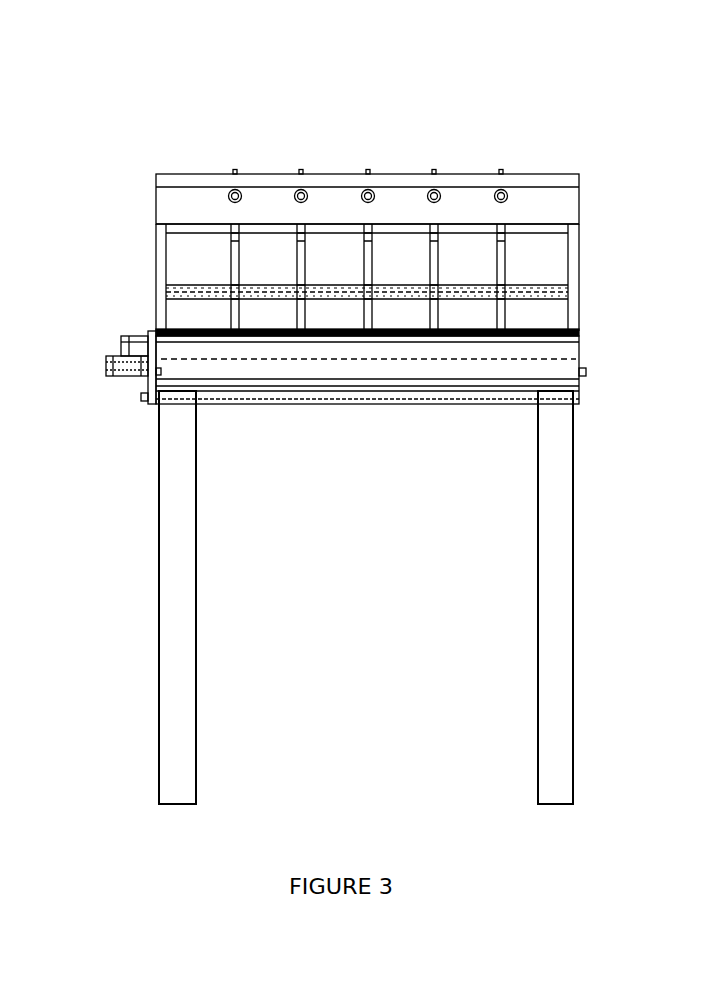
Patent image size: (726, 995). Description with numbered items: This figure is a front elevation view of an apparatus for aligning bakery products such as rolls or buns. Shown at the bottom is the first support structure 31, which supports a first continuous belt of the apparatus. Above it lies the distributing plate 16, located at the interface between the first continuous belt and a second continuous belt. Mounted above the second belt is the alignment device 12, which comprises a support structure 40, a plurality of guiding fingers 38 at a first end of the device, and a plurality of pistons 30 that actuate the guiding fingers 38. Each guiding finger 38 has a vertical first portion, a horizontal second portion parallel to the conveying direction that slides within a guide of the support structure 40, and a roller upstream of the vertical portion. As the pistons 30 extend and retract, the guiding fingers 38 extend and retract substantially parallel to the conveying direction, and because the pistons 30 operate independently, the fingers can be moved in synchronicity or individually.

The alignment device 12 is at (208, 105).
The distributing plate 16 is at (157, 322).
The pistons 30 is at (243, 173).
The first support structure 31 is at (172, 580).
The guiding fingers 38 is at (337, 285).
The support structure 40 is at (580, 208).